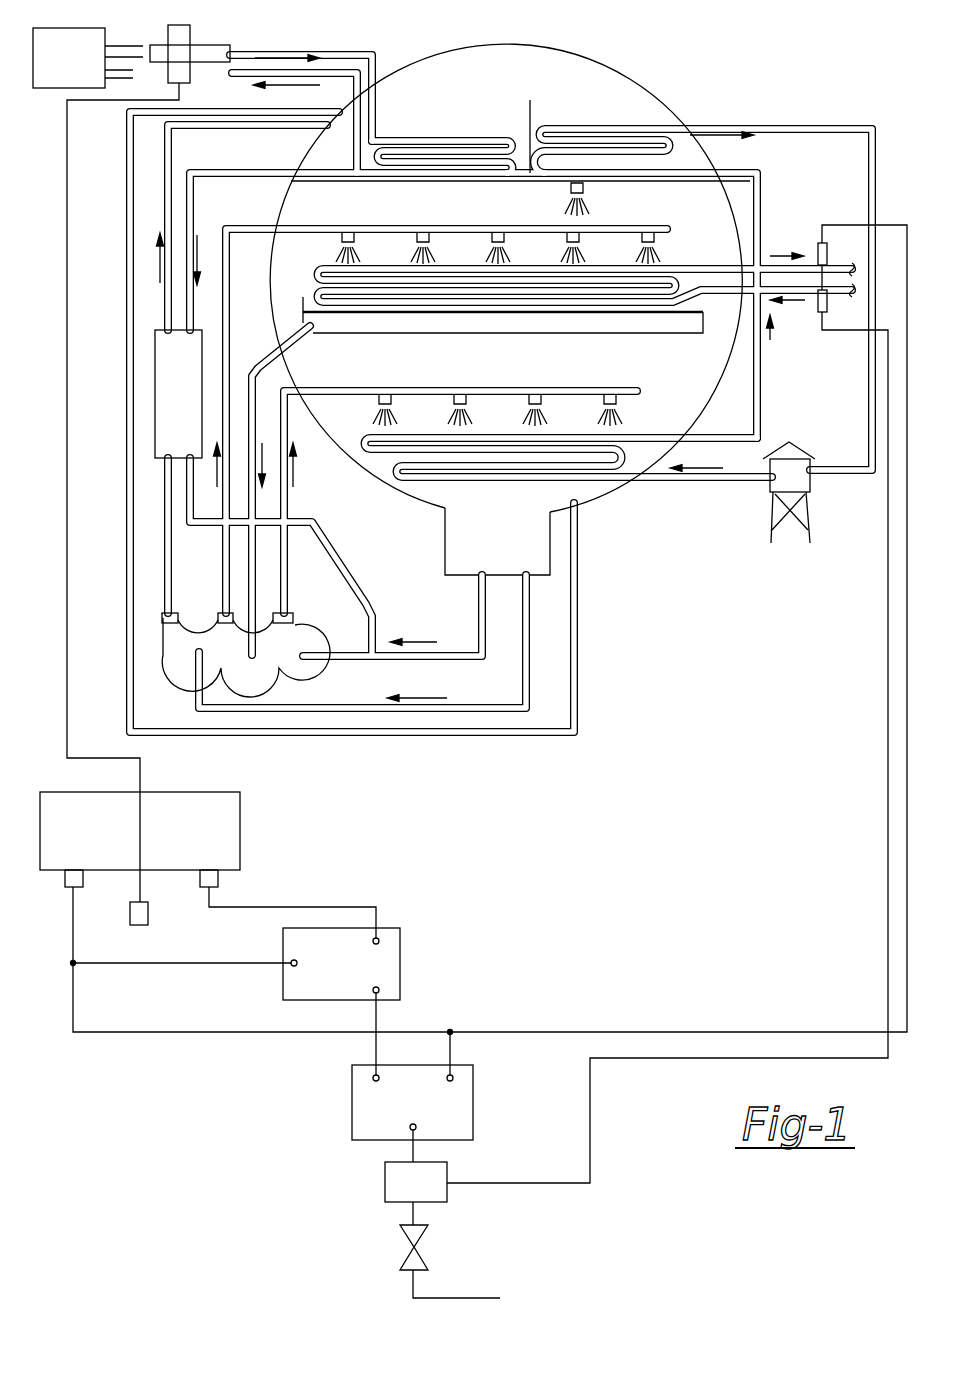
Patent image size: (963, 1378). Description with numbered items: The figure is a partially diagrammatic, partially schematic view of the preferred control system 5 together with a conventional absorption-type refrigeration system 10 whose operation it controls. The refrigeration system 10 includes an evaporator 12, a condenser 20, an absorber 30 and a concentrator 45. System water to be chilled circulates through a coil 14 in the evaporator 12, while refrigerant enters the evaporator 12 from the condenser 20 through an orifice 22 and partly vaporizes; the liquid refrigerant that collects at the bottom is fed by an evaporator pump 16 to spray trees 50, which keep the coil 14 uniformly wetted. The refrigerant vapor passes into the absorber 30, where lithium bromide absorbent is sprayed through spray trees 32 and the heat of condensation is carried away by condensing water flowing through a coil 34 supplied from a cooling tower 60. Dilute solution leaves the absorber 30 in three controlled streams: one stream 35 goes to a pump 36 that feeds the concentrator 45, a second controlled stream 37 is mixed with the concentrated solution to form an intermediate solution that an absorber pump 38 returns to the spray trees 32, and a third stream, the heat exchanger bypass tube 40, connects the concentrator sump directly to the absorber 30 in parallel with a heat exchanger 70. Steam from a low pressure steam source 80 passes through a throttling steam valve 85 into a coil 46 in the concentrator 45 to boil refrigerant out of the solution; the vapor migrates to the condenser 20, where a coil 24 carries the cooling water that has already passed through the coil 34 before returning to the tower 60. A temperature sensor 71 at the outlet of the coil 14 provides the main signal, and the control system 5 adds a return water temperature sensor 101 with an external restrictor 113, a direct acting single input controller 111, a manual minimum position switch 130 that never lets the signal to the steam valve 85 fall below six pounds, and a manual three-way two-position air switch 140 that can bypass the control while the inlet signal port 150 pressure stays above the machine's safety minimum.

The control system 5 is at (614, 899).
The refrigeration system 10 is at (848, 63).
The evaporator 12 is at (686, 252).
The coil 14 is at (316, 272).
The evaporator pump 16 is at (243, 684).
The condenser 20 is at (598, 84).
The orifice 22 is at (583, 190).
The coil 24 is at (655, 160).
The absorber 30 is at (483, 385).
The spray trees 32 is at (460, 392).
The coil 34 is at (366, 444).
The stream 35 is at (530, 667).
The pump 36 is at (166, 672).
The second controlled stream 37 is at (484, 633).
The absorber pump 38 is at (322, 680).
The heat exchanger bypass tube 40 is at (578, 697).
The concentrator 45 is at (384, 128).
The coil 46 is at (488, 136).
The spray trees 50 is at (572, 230).
The cooling tower 60 is at (812, 486).
The heat exchanger 70 is at (155, 362).
The temperature sensor 71 is at (820, 243).
The low pressure steam source 80 is at (79, 74).
The throttling steam valve 85 is at (192, 36).
The return water temperature sensor 101 is at (822, 312).
The direct acting single input controller 111 is at (473, 1084).
The external restrictor 113 is at (416, 1240).
The manual minimum position switch 130 is at (401, 950).
The manual three-way two-position air switch 140 is at (242, 822).
The inlet signal port 150 is at (68, 516).